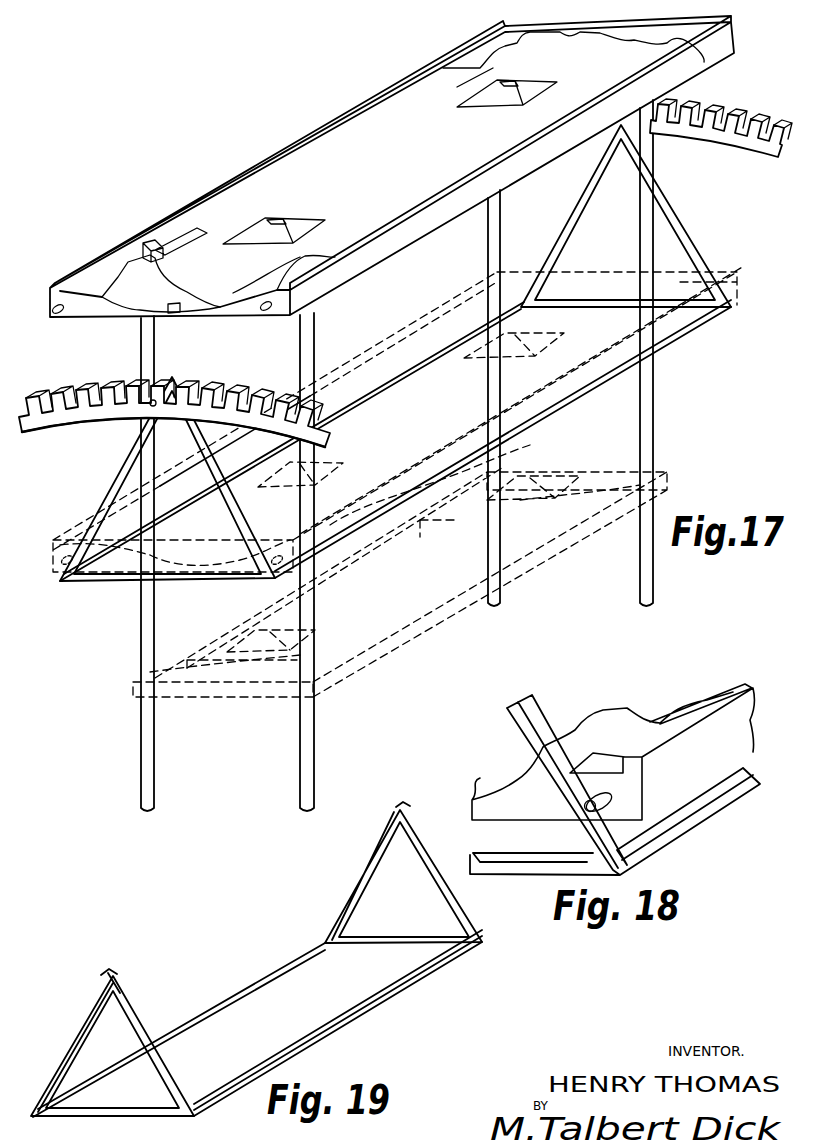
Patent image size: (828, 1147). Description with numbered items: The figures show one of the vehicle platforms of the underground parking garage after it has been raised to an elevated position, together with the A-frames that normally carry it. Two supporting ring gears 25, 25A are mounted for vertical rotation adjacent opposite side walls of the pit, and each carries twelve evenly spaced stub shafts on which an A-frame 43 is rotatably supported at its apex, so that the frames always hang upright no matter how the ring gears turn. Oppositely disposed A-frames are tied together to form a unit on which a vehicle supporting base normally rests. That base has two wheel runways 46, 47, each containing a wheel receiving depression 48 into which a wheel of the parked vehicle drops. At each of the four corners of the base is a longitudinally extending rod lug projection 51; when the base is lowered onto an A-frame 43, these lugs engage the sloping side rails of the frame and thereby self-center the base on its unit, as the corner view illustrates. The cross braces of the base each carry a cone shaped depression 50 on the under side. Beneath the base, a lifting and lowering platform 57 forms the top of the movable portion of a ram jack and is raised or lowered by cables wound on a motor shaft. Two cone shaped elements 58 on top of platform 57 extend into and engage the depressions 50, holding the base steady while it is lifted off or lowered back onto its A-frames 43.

In FIG. 17, the supporting ring gear 25 is at (65, 418).
In FIG. 17, the supporting ring gear 25A is at (728, 140).
In FIG. 17, the A-frame 43 is at (568, 228).
In FIG. 18, the A-frame 43 is at (542, 732).
In FIG. 19, the A-frame 43 is at (372, 868).
In FIG. 17, the wheel runway 46 is at (262, 185).
In FIG. 17, the wheel runway 47 is at (417, 197).
In FIG. 18, the wheel runway 47 is at (690, 705).
In FIG. 17, the wheel receiving depression 48 is at (478, 62).
In FIG. 17, the cone shaped depression 50 is at (546, 79).
In FIG. 17, the rod lug projection 51 is at (58, 320).
In FIG. 18, the rod lug projection 51 is at (614, 796).
In FIG. 17, the lifting and lowering platform 57 is at (430, 607).
In FIG. 17, the cone shaped element 58 is at (563, 466).